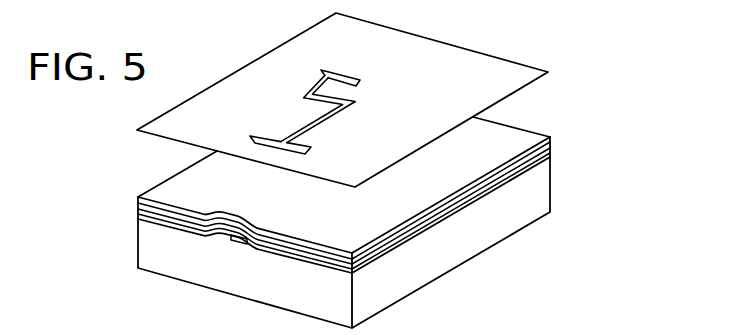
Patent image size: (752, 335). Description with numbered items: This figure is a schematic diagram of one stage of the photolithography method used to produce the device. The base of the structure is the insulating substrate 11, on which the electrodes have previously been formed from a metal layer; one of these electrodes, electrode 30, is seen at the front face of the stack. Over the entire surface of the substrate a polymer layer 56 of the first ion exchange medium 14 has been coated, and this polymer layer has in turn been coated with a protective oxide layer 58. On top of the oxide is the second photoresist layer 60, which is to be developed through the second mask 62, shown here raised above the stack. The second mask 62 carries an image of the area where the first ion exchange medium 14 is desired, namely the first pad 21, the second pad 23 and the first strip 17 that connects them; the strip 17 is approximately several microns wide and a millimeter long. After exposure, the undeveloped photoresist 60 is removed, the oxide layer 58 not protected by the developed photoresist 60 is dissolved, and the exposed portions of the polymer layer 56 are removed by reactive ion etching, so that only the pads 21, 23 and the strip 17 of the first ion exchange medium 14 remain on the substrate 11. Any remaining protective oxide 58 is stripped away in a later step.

The insulating substrate 11 is at (513, 213).
The first ion exchange medium 14 is at (300, 87).
The first strip 17 is at (302, 127).
The first pad 21 is at (325, 69).
The second pad 23 is at (249, 137).
The electrode 30 is at (238, 245).
The first ion exchange medium polymer layer 56 is at (548, 155).
The protective oxide layer 58 is at (552, 146).
The second photoresist layer 60 is at (503, 132).
The second mask 62 is at (512, 77).